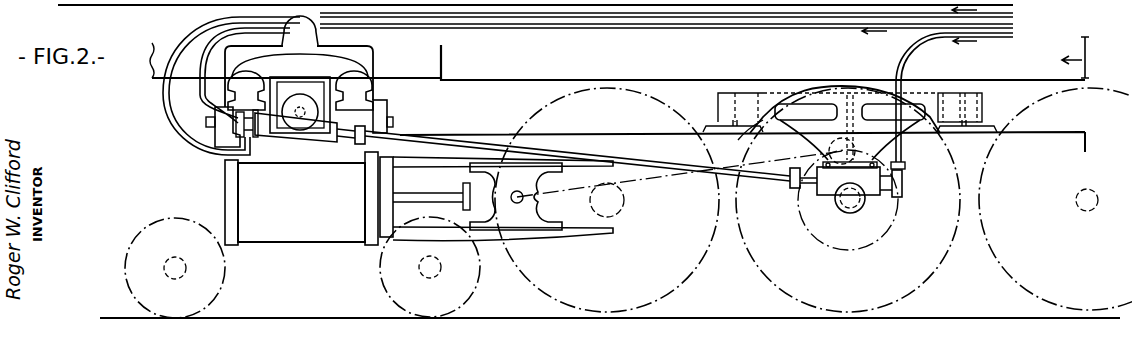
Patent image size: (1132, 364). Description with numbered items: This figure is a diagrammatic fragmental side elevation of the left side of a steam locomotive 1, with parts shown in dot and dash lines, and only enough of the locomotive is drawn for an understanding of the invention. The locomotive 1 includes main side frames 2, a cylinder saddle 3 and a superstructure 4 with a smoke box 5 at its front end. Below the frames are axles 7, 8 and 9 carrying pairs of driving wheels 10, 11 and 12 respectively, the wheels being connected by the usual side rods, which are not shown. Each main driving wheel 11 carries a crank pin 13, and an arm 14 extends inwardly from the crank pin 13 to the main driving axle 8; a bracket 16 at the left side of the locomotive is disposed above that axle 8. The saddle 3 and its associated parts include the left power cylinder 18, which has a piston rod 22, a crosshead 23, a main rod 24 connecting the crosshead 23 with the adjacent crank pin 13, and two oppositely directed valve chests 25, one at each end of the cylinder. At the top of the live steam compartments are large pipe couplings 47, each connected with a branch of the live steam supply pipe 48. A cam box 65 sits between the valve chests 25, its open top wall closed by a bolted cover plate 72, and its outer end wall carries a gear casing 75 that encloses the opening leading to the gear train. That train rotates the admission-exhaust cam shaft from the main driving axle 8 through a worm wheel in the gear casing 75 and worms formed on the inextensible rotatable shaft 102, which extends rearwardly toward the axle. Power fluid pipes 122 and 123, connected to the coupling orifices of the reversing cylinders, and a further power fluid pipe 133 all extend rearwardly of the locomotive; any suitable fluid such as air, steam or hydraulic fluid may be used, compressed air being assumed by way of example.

The locomotive 1 is at (1083, 57).
The main side frames 2 is at (1025, 134).
The cylinder saddle 3 is at (378, 56).
The superstructure 4 is at (763, 62).
The smoke box 5 is at (151, 79).
The axle 7 is at (624, 204).
The axle 8 is at (863, 212).
The axle 9 is at (1082, 207).
The driving wheels 10 is at (543, 287).
The main driving wheels 11 is at (780, 280).
The driving wheels 12 is at (1025, 278).
The crank pin 13 is at (829, 145).
The arm 14 is at (854, 190).
The bracket 16 is at (775, 95).
The left power cylinder 18 is at (309, 198).
The piston rod 22 is at (409, 193).
The crosshead 23 is at (516, 196).
The main rod 24 is at (662, 178).
The valve chest 25 is at (220, 133).
The pipe coupling 47 is at (300, 90).
The live steam supply pipe 48 is at (300, 43).
The cam box 65 is at (300, 105).
The cover plate 72 is at (310, 80).
The gear casing 75 is at (299, 128).
The rotatable shaft 102 is at (633, 158).
The power fluid pipe 122 is at (172, 118).
The power fluid pipe 123 is at (217, 102).
The power fluid pipe 133 is at (917, 48).